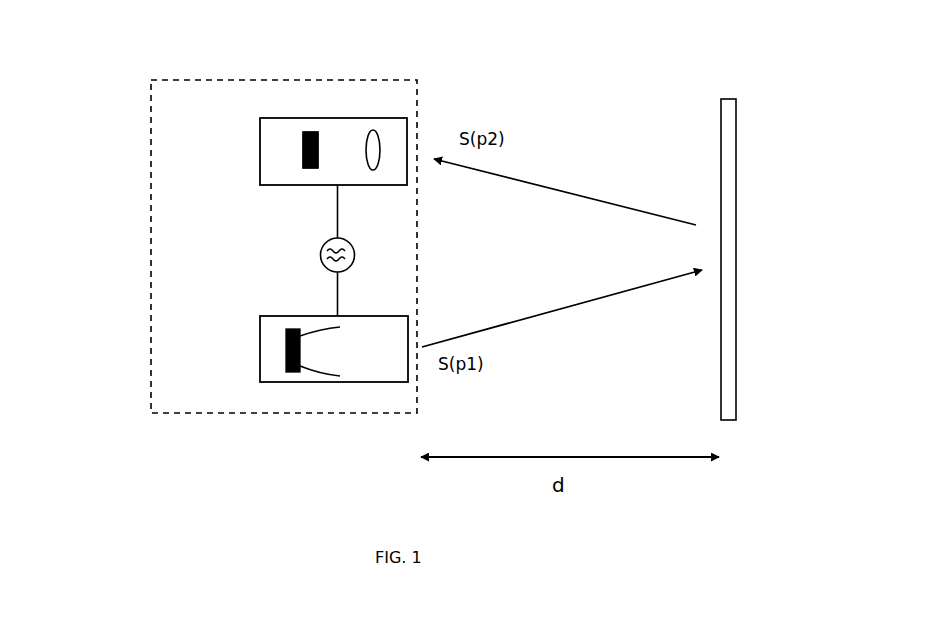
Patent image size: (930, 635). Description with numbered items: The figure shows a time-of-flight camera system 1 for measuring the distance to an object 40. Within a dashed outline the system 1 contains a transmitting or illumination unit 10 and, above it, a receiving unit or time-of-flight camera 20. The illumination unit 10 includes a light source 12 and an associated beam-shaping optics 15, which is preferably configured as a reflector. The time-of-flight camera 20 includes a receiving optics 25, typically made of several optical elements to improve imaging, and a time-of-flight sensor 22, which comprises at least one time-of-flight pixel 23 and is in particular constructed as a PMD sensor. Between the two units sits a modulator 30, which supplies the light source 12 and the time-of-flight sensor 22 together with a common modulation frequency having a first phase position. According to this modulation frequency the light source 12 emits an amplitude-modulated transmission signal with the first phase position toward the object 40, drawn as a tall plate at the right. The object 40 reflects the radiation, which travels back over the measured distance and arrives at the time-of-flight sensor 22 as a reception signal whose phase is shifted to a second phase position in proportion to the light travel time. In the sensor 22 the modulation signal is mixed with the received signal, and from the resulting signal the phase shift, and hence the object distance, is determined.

The time-of-flight camera system 1 is at (126, 102).
The illumination unit 10 is at (364, 392).
The light source 12 is at (283, 352).
The beam-shaping optics 15 is at (318, 378).
The time-of-flight camera 20 is at (287, 106).
The time-of-flight sensor 22 is at (298, 148).
The time-of-flight pixel 23 is at (310, 150).
The receiving optics 25 is at (370, 125).
The modulator 30 is at (318, 263).
The object 40 is at (737, 397).